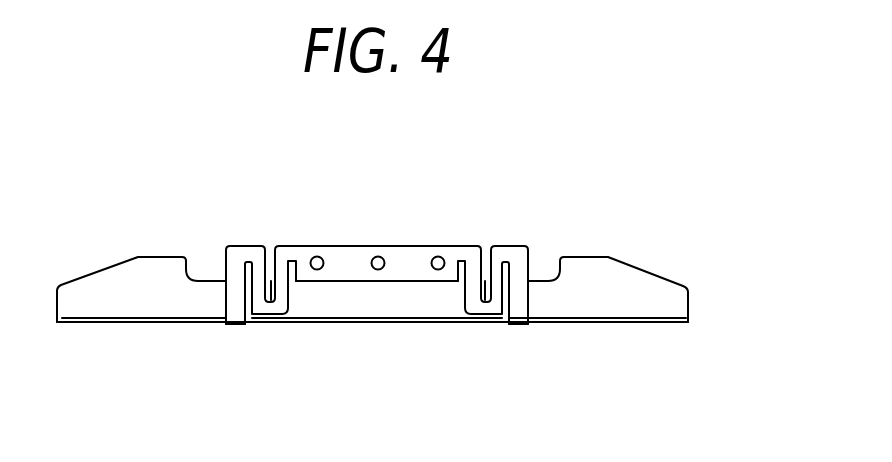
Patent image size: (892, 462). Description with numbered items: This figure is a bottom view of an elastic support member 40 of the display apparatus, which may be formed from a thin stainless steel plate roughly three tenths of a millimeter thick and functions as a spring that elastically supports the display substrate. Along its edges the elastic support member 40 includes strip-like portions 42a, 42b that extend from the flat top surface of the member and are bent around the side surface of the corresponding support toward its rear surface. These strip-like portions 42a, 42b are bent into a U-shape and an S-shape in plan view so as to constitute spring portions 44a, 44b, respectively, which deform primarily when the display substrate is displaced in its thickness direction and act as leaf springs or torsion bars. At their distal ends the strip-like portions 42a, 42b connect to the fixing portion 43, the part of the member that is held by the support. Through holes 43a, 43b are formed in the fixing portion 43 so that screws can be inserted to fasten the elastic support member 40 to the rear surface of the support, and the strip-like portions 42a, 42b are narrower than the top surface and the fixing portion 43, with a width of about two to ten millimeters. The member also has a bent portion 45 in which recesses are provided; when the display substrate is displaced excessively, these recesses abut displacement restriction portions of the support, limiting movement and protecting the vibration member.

The elastic support member 40 is at (650, 150).
The strip-like portion 42a is at (232, 310).
The strip-like portion 42b is at (522, 320).
The fixing portion 43 is at (347, 252).
The through hole 43a is at (315, 255).
The through hole 43b is at (438, 252).
The spring portion 44a is at (232, 250).
The spring portion 44b is at (502, 252).
The bent portion 45 is at (605, 322).